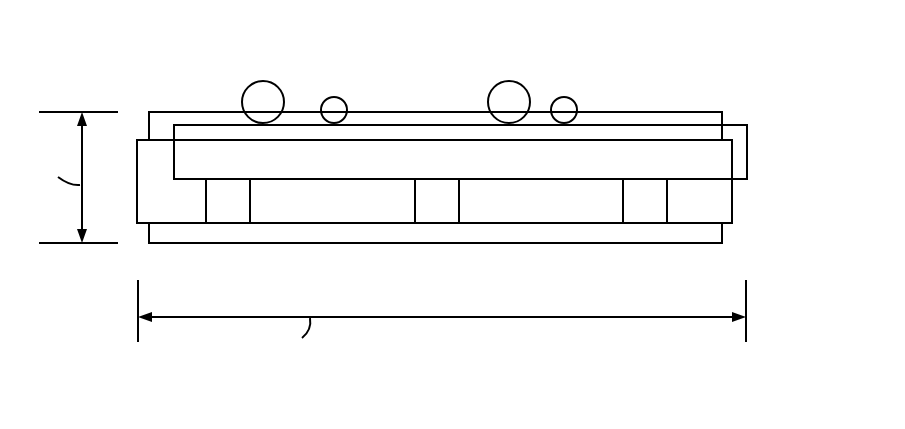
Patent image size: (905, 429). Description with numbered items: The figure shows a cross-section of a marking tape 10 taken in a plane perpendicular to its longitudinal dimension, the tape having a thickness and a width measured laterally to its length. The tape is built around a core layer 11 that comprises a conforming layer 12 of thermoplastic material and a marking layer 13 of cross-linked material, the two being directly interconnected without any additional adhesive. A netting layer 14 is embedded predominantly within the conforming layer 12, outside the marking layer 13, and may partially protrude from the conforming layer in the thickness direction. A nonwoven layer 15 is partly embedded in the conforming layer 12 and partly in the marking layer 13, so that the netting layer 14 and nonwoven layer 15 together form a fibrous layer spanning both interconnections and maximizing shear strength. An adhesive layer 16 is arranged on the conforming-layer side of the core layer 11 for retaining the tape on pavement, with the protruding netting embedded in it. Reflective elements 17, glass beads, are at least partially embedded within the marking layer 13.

The marking tape 10 is at (672, 72).
The core layer 11 is at (807, 110).
The conforming layer 12 is at (720, 207).
The marking layer 13 is at (162, 122).
The netting layer 14 is at (225, 213).
The nonwoven layer 15 is at (744, 125).
The adhesive layer 16 is at (577, 233).
The reflective elements 17 is at (262, 97).